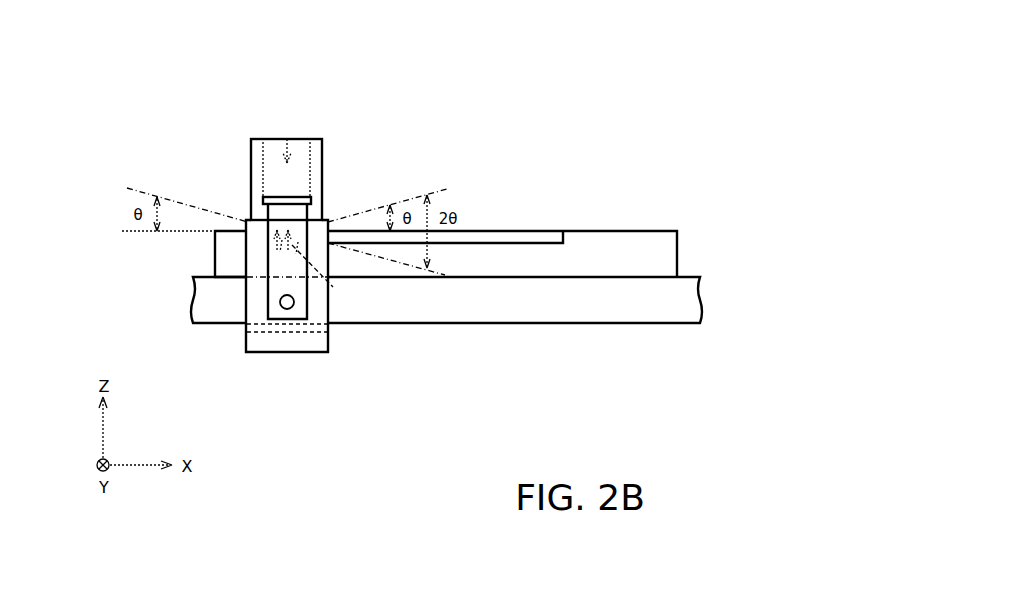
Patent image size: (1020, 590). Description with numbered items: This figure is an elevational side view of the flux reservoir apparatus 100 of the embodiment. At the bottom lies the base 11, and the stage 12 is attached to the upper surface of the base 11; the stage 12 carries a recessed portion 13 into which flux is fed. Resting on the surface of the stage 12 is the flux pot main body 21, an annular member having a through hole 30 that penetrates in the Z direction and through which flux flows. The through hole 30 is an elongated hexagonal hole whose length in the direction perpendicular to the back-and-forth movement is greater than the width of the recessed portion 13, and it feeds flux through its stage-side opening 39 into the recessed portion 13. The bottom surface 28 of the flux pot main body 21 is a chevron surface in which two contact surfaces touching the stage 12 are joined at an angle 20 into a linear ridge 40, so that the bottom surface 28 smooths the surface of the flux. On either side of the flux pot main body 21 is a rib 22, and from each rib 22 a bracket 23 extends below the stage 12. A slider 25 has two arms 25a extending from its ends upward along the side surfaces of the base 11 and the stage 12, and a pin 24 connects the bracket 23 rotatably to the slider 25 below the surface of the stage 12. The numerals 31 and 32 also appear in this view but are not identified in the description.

The flux reservoir apparatus 100 is at (567, 119).
The base 11 is at (697, 301).
The stage 12 is at (678, 240).
The recessed portion 13 is at (556, 241).
The angle 20 is at (230, 147).
The flux pot main body 21 is at (322, 139).
The rib 22 is at (296, 197).
The bracket 23 is at (291, 232).
The pin 24 is at (294, 302).
The slider 25 is at (282, 353).
The arm 25a is at (328, 260).
The bottom surface 28 is at (246, 246).
The through hole 30 is at (287, 139).
The first emitter 31 is at (277, 138).
The second emitter 32 is at (296, 138).
The stage-side opening 39 is at (268, 268).
The linear ridge 40 is at (333, 287).